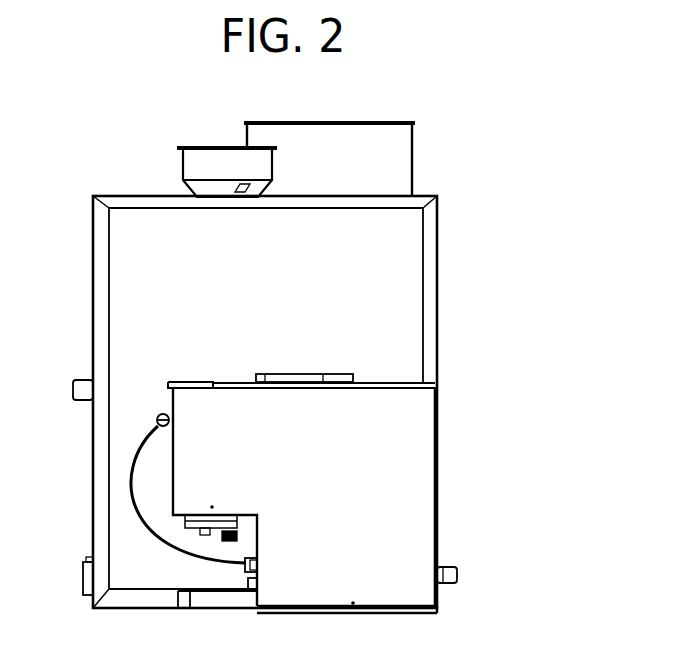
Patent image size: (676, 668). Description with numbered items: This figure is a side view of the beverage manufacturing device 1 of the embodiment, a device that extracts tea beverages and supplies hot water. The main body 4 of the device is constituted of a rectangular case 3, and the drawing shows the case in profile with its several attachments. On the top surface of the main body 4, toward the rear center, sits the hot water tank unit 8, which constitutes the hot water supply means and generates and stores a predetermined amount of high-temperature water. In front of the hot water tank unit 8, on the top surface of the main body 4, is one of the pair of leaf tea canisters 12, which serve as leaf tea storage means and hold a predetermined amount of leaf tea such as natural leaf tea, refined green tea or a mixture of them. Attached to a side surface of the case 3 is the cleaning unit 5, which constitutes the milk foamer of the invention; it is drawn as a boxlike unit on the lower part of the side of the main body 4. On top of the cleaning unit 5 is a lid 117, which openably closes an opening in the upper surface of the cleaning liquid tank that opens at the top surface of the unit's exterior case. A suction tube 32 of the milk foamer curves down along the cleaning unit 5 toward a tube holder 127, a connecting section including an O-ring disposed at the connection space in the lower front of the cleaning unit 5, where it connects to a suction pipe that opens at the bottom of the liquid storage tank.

The beverage manufacturing device 1 is at (446, 169).
The rectangular case 3 is at (440, 219).
The main body 4 is at (445, 291).
The cleaning unit 5 is at (420, 471).
The hot water tank unit 8 is at (371, 122).
The leaf tea canister 12 is at (199, 147).
The suction tube 32 is at (130, 487).
The lid 117 is at (297, 373).
The tube holder 127 is at (245, 571).